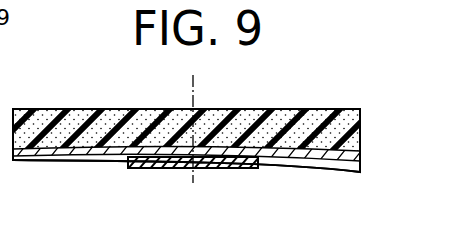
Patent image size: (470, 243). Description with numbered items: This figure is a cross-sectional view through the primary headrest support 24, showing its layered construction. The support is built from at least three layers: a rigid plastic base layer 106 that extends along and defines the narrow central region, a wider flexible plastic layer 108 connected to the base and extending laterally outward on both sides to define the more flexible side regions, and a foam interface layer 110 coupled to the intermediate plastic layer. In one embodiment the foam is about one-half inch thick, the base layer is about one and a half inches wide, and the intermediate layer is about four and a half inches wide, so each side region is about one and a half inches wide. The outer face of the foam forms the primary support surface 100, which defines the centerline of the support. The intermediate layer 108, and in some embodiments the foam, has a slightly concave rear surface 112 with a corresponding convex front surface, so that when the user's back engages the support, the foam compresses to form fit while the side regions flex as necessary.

The primary headrest support 24 is at (31, 98).
The primary support surface 100 is at (287, 116).
The foam interface layer 110 is at (363, 101).
The flexible plastic layer 108 is at (300, 163).
The rigid plastic base layer 106 is at (241, 168).
The concave rear surface 112 is at (81, 161).